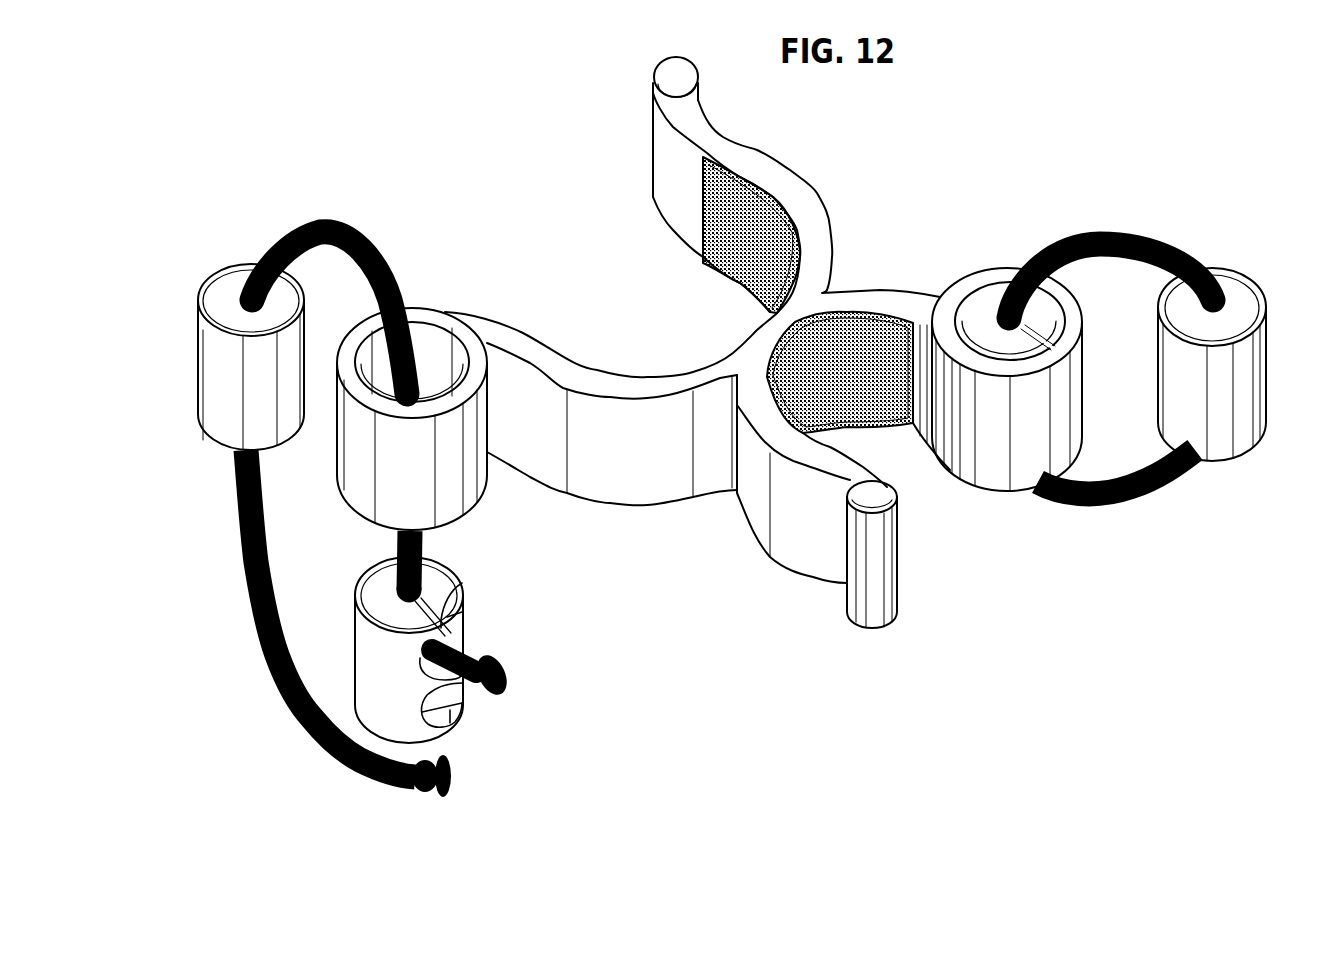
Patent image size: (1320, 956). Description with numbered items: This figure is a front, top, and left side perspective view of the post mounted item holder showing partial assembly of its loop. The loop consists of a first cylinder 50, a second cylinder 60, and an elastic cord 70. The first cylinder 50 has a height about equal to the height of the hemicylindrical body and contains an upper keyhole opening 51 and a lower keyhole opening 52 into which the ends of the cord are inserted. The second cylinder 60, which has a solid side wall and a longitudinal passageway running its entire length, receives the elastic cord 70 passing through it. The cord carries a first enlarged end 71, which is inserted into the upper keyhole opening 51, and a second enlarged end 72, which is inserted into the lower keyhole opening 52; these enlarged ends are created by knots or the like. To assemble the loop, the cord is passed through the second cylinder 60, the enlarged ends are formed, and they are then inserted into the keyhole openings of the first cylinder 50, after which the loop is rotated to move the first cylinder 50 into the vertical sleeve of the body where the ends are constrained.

The first cylinder 50 is at (465, 620).
The upper keyhole opening 51 is at (440, 628).
The lower keyhole opening 52 is at (455, 730).
The second cylinder 60 is at (216, 443).
The elastic cord 70 is at (371, 240).
The first enlarged end 71 is at (507, 677).
The second enlarged end 72 is at (450, 787).